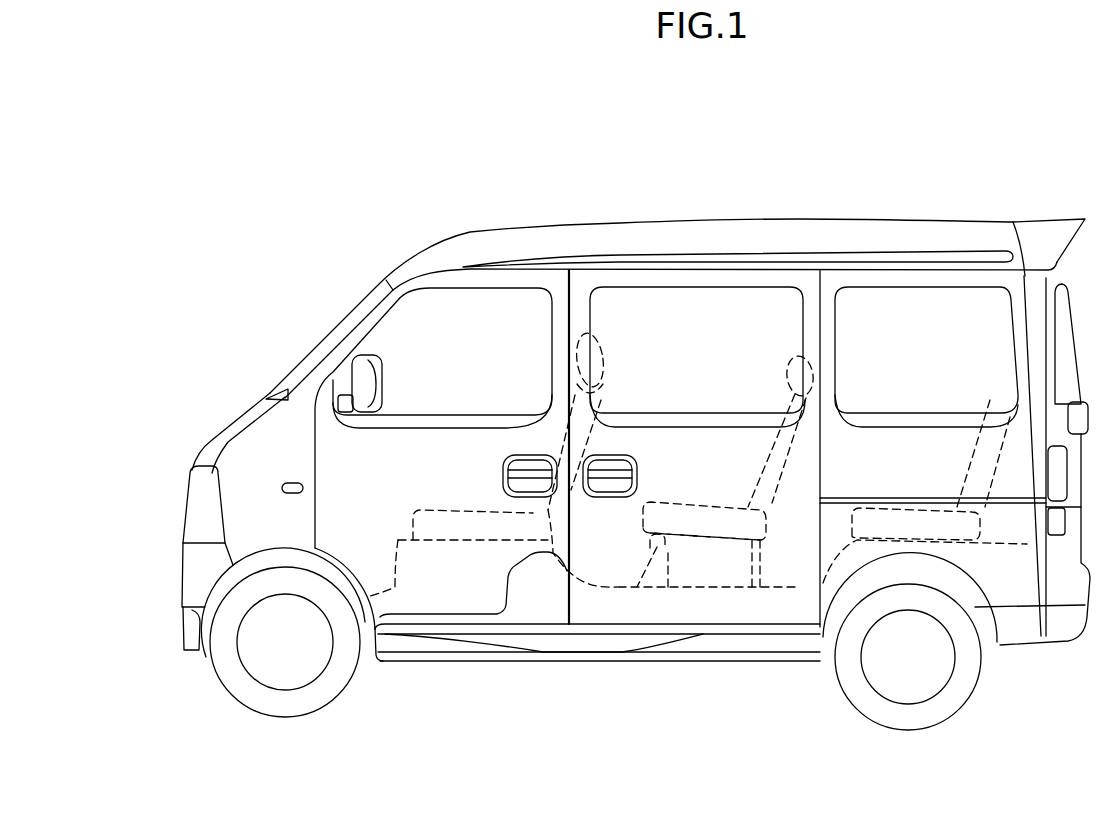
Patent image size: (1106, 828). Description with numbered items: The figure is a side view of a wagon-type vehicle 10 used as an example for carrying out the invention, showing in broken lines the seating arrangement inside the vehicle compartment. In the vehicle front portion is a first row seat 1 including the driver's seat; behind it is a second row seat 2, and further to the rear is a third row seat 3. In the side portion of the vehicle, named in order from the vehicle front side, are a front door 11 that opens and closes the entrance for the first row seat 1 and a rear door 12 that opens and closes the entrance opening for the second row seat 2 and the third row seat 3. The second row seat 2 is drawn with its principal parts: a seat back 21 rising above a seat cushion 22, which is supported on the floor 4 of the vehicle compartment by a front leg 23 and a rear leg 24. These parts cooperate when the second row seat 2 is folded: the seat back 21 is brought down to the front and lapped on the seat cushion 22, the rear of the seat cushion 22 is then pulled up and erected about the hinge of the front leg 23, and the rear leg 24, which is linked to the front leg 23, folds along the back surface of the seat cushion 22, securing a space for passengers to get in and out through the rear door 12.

The vehicle 10 is at (792, 220).
The front door 11 is at (435, 292).
The rear door 12 is at (605, 280).
The first row seat 1 is at (600, 362).
The second row seat 2 is at (818, 372).
The third row seat 3 is at (995, 392).
The seat back 21 is at (748, 467).
The seat cushion 22 is at (687, 493).
The front leg 23 is at (657, 548).
The rear leg 24 is at (785, 562).
The floor 4 is at (800, 583).